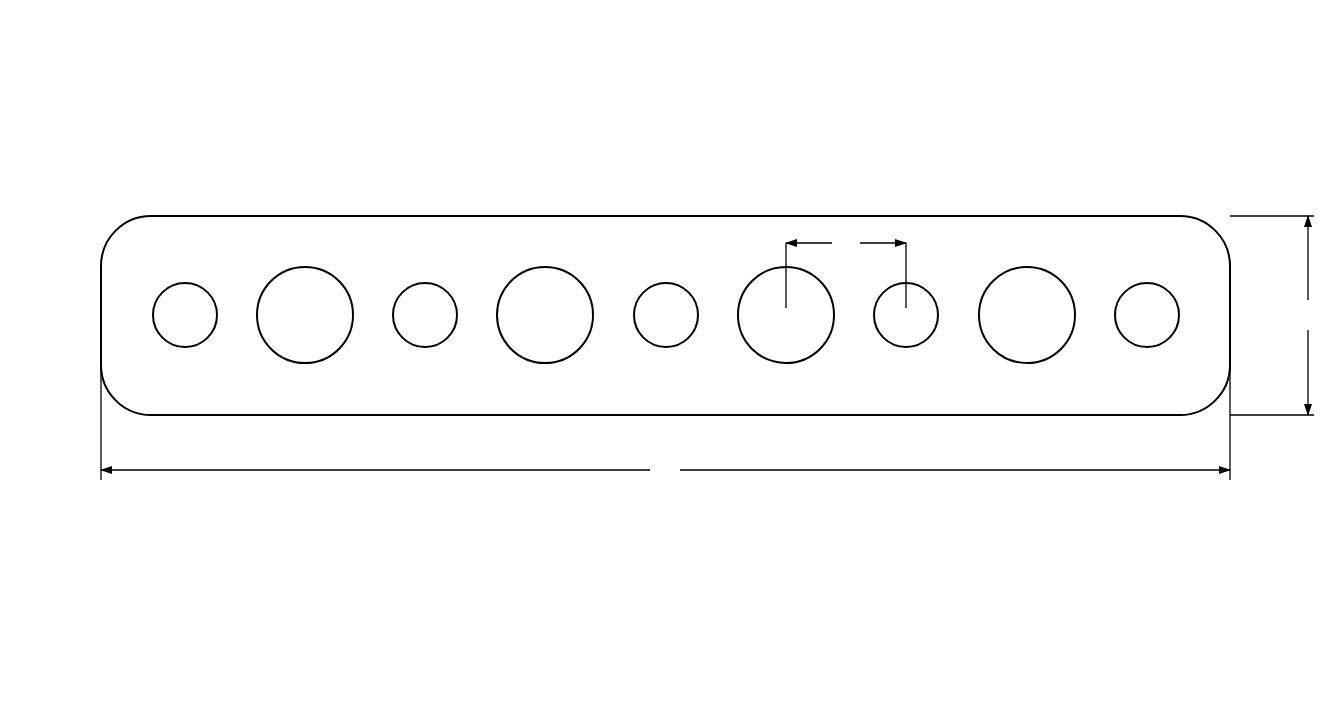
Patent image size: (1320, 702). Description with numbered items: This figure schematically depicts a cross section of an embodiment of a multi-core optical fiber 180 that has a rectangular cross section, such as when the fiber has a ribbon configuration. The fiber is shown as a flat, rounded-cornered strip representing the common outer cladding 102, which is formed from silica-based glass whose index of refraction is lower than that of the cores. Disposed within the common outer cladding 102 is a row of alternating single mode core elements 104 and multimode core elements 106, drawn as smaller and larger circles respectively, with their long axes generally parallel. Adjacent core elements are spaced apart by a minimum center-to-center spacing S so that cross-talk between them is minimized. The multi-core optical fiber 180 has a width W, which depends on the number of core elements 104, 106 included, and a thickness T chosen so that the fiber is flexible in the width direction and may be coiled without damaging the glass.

The multi-core optical fiber 180 is at (1107, 156).
The common outer cladding 102 is at (970, 217).
The single mode core element 104 is at (197, 284).
The multimode core element 106 is at (330, 272).